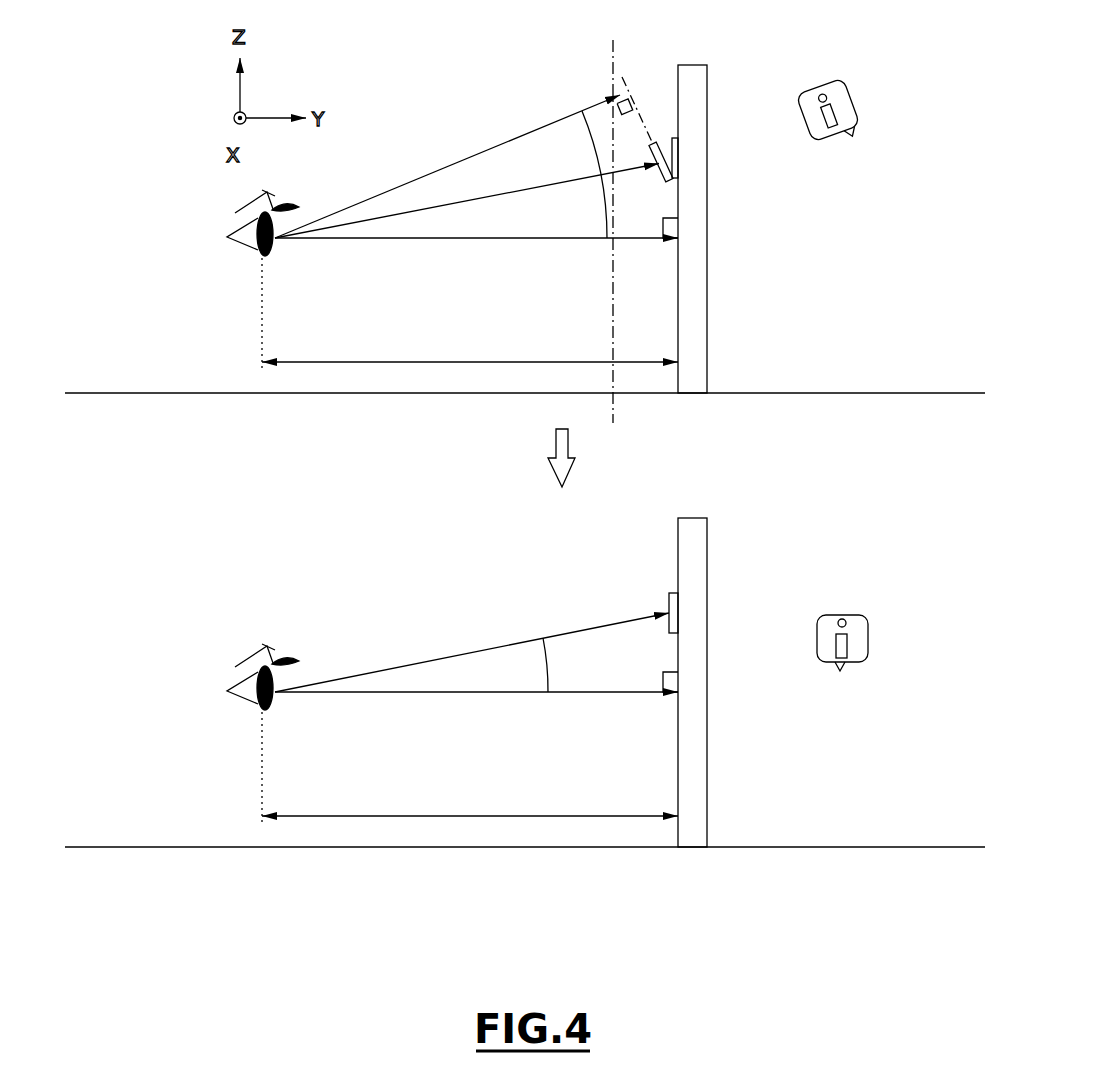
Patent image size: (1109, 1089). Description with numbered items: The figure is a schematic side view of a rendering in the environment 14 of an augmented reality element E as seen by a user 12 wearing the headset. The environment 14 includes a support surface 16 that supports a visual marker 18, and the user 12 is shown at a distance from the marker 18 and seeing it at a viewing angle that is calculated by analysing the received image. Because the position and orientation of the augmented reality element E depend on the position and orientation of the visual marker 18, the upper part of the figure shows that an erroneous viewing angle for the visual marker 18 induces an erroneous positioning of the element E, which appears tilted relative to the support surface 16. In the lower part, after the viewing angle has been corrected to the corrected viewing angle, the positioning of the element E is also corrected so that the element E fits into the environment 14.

The user 12 is at (247, 232).
The environment 14 is at (203, 299).
The support surface 16 is at (697, 103).
The visual marker 18 is at (672, 138).
The augmented reality element E is at (846, 91).